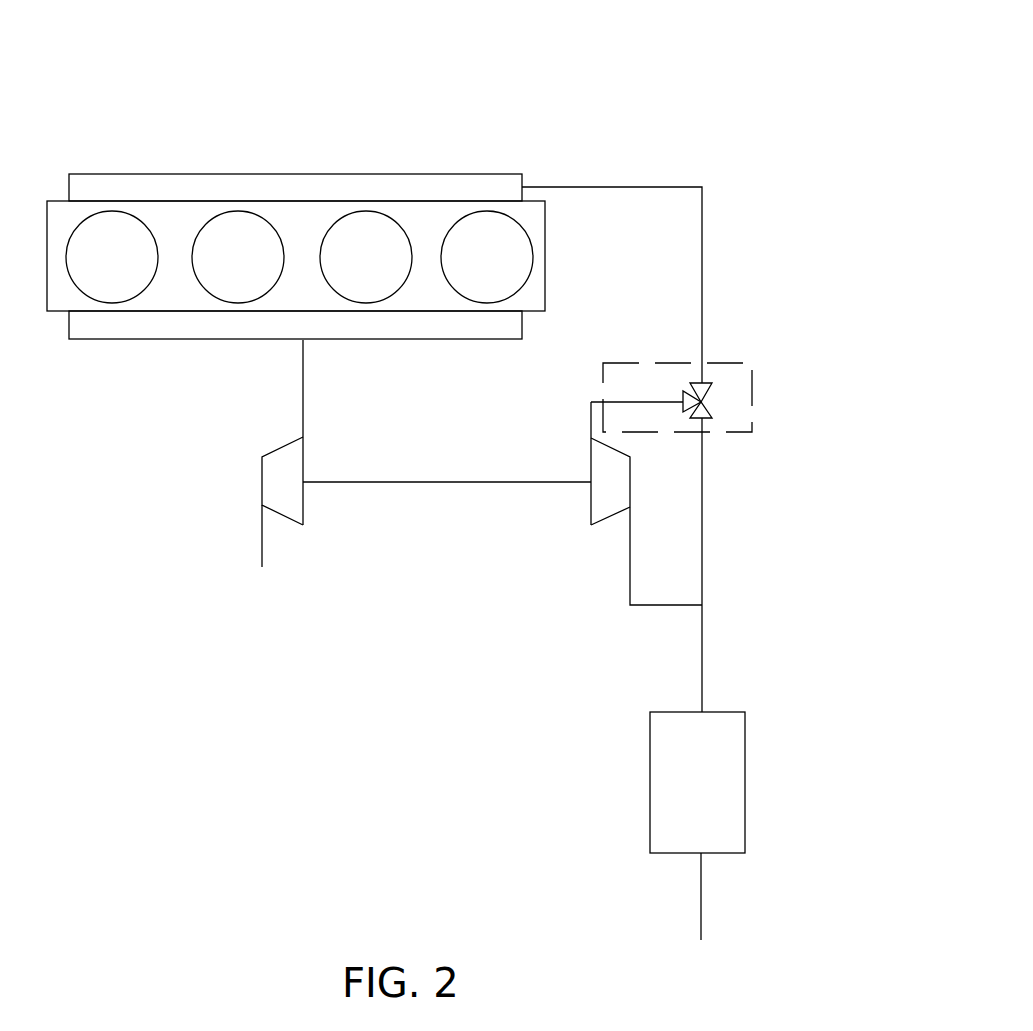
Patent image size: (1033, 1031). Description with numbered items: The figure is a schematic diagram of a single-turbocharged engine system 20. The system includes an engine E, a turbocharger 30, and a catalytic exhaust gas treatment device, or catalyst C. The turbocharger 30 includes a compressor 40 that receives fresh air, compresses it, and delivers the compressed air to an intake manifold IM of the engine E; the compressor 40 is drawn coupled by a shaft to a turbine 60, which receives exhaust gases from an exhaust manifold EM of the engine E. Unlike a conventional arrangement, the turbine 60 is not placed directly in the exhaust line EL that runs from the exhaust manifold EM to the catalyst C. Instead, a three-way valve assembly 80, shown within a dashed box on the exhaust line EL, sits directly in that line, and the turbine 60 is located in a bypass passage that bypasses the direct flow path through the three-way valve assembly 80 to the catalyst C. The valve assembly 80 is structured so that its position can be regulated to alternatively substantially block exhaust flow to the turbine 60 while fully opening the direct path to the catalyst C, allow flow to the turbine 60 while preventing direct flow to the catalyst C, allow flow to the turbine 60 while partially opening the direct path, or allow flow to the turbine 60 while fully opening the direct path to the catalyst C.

The turbocharged engine system 20 is at (570, 146).
The engine E is at (193, 210).
The exhaust manifold EM is at (337, 187).
The intake manifold IM is at (199, 328).
The exhaust line EL is at (702, 228).
The turbocharger 30 is at (433, 453).
The compressor 40 is at (290, 502).
The turbine 60 is at (608, 493).
The 3-way valve assembly 80 is at (728, 362).
The catalyst C is at (667, 780).